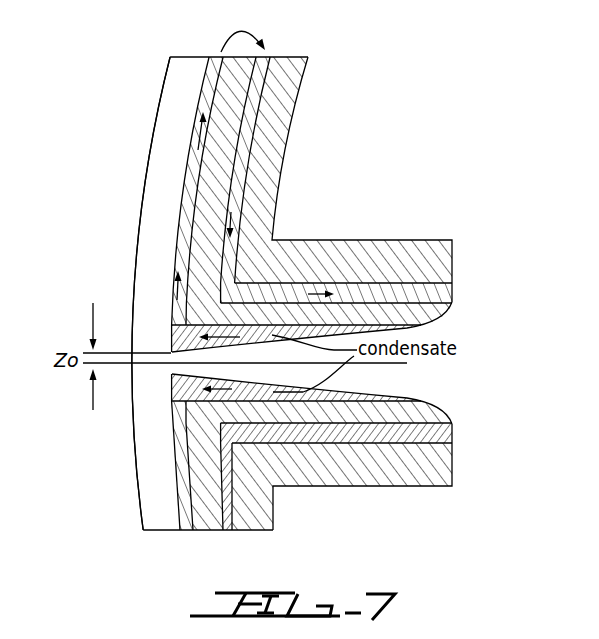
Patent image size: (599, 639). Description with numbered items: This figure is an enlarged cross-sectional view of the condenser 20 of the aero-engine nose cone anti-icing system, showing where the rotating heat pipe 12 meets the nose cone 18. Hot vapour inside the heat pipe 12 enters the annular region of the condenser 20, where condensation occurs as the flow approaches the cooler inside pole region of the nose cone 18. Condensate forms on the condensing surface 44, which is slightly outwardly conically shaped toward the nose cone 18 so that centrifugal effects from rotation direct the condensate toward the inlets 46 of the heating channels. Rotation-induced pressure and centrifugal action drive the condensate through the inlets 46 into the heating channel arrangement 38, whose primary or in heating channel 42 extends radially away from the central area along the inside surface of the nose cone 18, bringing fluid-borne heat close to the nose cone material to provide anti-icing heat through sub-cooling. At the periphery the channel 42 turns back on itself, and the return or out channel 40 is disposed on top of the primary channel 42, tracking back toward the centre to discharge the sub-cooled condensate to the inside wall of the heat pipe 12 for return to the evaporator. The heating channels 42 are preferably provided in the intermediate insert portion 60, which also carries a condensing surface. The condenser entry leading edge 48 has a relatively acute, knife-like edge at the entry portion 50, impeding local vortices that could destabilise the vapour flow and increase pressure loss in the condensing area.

The rotating heat pipe 12 is at (335, 472).
The nose cone 18 is at (137, 133).
The condenser 20 is at (424, 215).
The heating channels 38 is at (200, 175).
The return channel 40 is at (272, 63).
The primary heating channel 42 is at (205, 66).
The condensing surface 44 is at (389, 398).
The inlets 46 is at (151, 283).
The condenser entry leading edge 48 is at (441, 311).
The entry portion 50 is at (440, 414).
The insert portion 60 is at (273, 118).